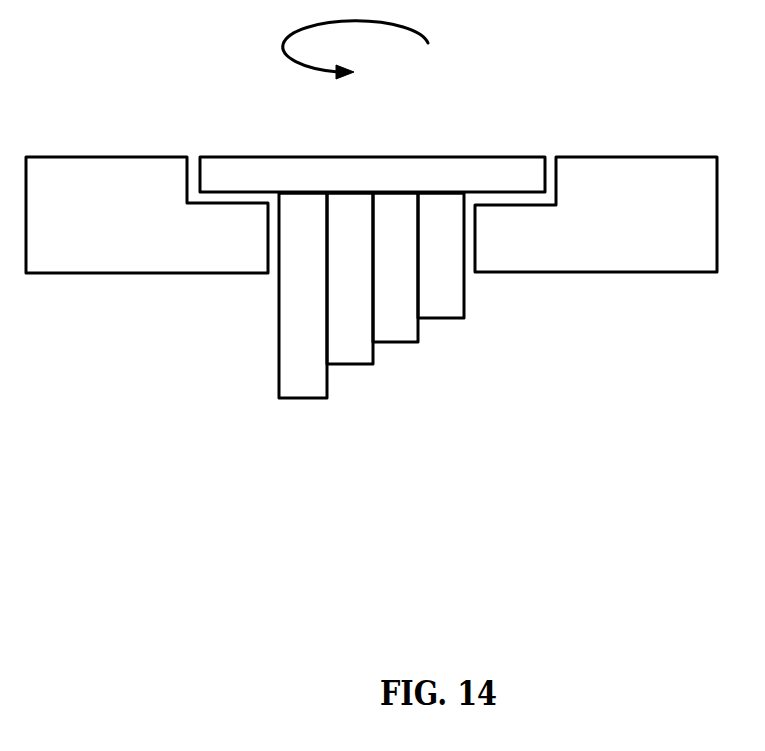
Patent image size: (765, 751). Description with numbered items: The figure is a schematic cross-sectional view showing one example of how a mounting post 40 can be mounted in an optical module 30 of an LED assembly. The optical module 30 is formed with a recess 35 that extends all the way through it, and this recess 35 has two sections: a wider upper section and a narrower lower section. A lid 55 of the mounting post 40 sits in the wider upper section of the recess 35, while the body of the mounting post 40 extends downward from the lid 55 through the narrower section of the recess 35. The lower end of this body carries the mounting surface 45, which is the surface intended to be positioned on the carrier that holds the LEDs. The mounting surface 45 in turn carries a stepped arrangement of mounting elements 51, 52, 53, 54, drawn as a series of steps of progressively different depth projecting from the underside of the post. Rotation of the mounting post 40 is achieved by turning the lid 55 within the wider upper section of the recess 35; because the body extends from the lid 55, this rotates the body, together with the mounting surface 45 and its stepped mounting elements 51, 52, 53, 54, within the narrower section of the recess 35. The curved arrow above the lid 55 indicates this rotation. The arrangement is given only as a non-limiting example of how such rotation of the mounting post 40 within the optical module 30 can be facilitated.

The optical module 30 is at (106, 240).
The recess 35 is at (530, 197).
The mounting post 40 is at (493, 157).
The mounting surface 45 is at (398, 192).
The lid 55 is at (330, 178).
The mounting element 51 is at (302, 390).
The mounting element 52 is at (352, 345).
The mounting element 53 is at (402, 327).
The mounting element 54 is at (448, 305).